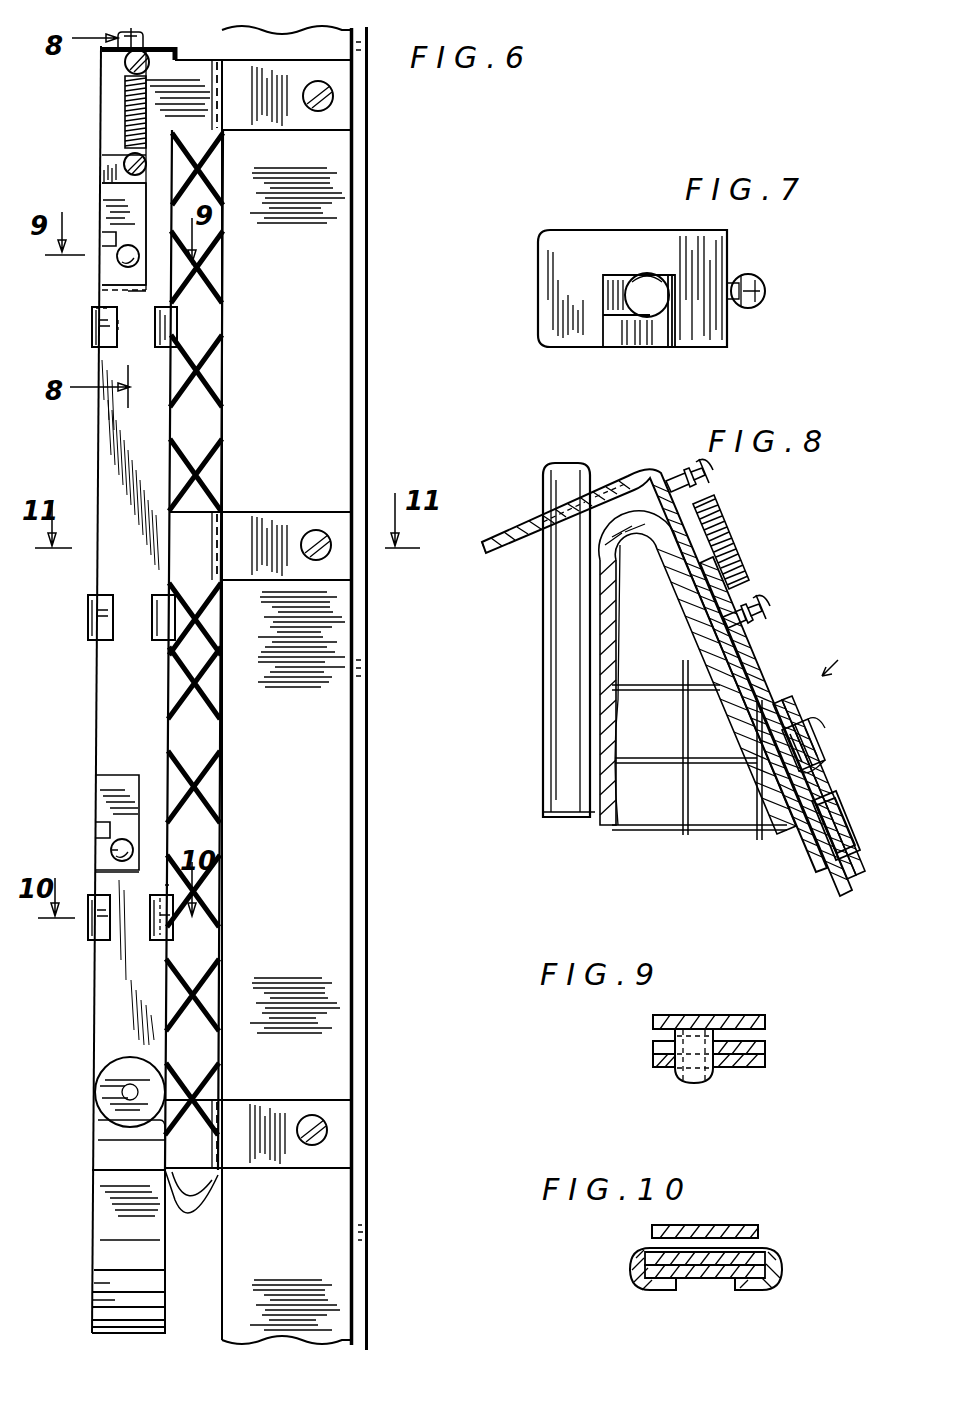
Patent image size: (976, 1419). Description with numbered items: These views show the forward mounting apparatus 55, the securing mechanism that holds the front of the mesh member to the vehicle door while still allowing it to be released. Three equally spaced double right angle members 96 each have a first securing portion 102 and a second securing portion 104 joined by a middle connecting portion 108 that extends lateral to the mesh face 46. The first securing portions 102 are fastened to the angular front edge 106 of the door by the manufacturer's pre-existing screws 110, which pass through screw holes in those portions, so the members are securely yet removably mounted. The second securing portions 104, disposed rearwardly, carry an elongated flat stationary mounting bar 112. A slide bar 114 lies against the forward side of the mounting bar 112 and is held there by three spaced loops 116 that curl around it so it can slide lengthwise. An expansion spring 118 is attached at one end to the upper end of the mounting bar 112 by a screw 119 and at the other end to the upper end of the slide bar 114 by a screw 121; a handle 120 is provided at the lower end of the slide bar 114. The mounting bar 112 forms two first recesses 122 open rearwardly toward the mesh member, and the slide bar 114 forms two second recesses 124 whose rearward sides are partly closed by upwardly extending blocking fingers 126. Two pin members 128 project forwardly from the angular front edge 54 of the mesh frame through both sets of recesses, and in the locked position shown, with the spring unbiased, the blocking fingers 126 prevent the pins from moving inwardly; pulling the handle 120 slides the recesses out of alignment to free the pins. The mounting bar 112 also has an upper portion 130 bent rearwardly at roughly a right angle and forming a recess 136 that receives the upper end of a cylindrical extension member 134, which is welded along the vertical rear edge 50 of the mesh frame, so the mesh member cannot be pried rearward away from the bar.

In FIG. 6, the mesh face 46 is at (200, 350).
In FIG. 8, the mesh face 46 is at (665, 832).
In FIG. 8, the vertical rear edge 50 is at (600, 828).
In FIG. 8, the angular front edge 54 is at (832, 884).
In FIG. 9, the angular front edge 54 is at (672, 1012).
In FIG. 10, the angular front edge 54 is at (716, 1222).
In FIG. 8, the forward mounting apparatus 55 is at (839, 657).
In FIG. 6, the double right angle members 96 is at (250, 1098).
In FIG. 6, the first securing portions 102 is at (298, 1190).
In FIG. 6, the second securing portions 104 is at (190, 1140).
In FIG. 6, the angular front edge of door 106 is at (300, 928).
In FIG. 6, the middle connecting portions 108 is at (228, 1190).
In FIG. 6, the screws 110 is at (320, 1115).
In FIG. 6, the stationary mounting bar 112 is at (104, 1202).
In FIG. 8, the stationary mounting bar 112 is at (852, 878).
In FIG. 10, the stationary mounting bar 112 is at (745, 1250).
In FIG. 6, the slide bar 114 is at (100, 1024).
In FIG. 8, the slide bar 114 is at (810, 690).
In FIG. 9, the slide bar 114 is at (653, 1060).
In FIG. 10, the slide bar 114 is at (700, 1278).
In FIG. 6, the loops 116 is at (90, 928).
In FIG. 8, the loops 116 is at (856, 810).
In FIG. 10, the loops 116 is at (642, 1258).
In FIG. 6, the expansion spring 118 is at (124, 114).
In FIG. 7, the expansion spring 118 is at (786, 268).
In FIG. 8, the expansion spring 118 is at (761, 545).
In FIG. 8, the screw 119 is at (708, 472).
In FIG. 6, the handle 120 is at (96, 1094).
In FIG. 8, the screw 121 is at (768, 610).
In FIG. 6, the first recesses 122 is at (160, 895).
In FIG. 6, the second recesses 124 is at (112, 790).
In FIG. 6, the blocking fingers 126 is at (100, 826).
In FIG. 9, the blocking fingers 126 is at (765, 1047).
In FIG. 6, the pin members 128 is at (110, 852).
In FIG. 7, the pin members 128 is at (652, 312).
In FIG. 8, the pin members 128 is at (815, 722).
In FIG. 9, the pin members 128 is at (693, 1077).
In FIG. 7, the upper portion 130 is at (612, 240).
In FIG. 8, the upper portion 130 is at (626, 468).
In FIG. 8, the extension member 134 is at (543, 702).
In FIG. 7, the recess 136 is at (615, 350).
In FIG. 8, the recess 136 is at (545, 508).